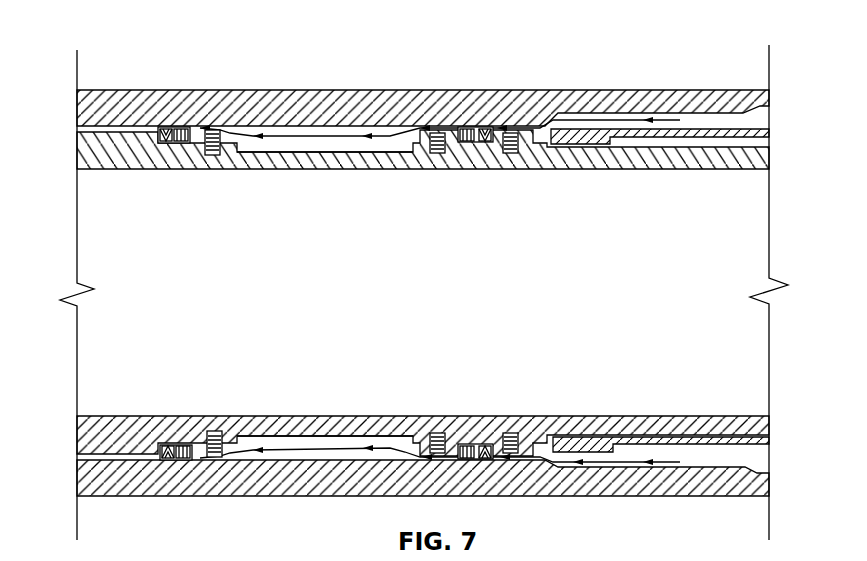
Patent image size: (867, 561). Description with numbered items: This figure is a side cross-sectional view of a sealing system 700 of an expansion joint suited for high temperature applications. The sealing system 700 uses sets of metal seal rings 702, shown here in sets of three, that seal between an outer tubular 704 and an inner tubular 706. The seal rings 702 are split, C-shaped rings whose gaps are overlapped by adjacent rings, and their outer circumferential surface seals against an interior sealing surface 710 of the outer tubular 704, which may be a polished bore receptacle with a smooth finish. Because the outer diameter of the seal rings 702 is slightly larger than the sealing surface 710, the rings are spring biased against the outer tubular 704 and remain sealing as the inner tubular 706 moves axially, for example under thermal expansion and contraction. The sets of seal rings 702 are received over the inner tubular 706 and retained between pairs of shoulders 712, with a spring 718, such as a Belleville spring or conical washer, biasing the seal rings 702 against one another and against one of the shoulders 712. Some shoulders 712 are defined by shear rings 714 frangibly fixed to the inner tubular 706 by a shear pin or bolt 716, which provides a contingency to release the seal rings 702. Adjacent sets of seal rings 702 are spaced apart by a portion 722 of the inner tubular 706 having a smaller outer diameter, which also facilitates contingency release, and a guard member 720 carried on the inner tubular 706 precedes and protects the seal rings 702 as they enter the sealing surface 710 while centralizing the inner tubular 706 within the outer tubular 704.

The sealing system 700 is at (107, 28).
The metal seal ring 702 is at (180, 128).
The outer tubular 704 is at (743, 97).
The inner tubular 706 is at (740, 168).
The interior sealing surface 710 is at (305, 128).
The shoulder 712 is at (160, 127).
The shear ring 714 is at (207, 132).
The shear pin or bolt 716 is at (210, 155).
The spring 718 is at (186, 128).
The guard member 720 is at (710, 128).
The smaller-diameter portion of inner tubular 722 is at (373, 150).